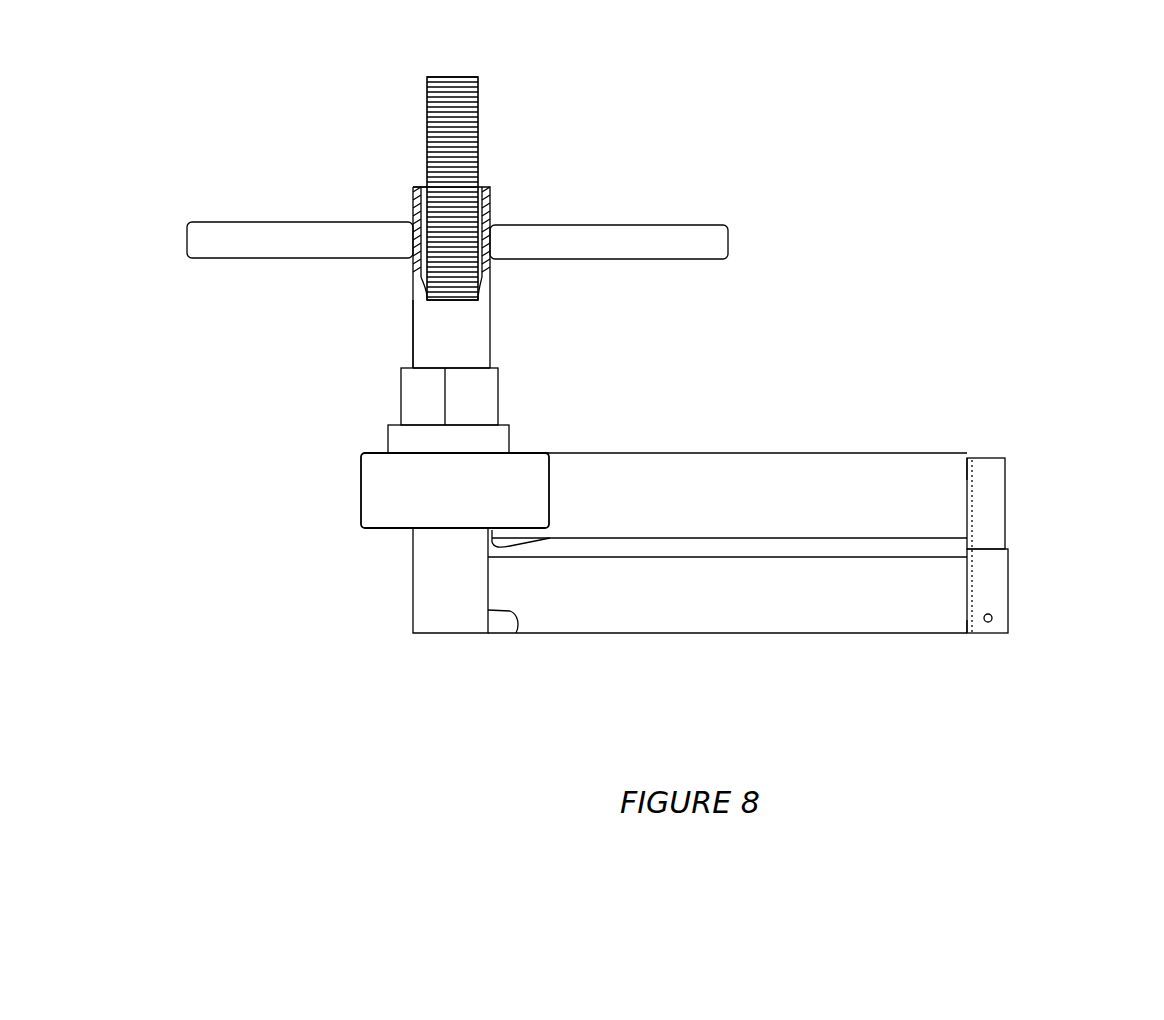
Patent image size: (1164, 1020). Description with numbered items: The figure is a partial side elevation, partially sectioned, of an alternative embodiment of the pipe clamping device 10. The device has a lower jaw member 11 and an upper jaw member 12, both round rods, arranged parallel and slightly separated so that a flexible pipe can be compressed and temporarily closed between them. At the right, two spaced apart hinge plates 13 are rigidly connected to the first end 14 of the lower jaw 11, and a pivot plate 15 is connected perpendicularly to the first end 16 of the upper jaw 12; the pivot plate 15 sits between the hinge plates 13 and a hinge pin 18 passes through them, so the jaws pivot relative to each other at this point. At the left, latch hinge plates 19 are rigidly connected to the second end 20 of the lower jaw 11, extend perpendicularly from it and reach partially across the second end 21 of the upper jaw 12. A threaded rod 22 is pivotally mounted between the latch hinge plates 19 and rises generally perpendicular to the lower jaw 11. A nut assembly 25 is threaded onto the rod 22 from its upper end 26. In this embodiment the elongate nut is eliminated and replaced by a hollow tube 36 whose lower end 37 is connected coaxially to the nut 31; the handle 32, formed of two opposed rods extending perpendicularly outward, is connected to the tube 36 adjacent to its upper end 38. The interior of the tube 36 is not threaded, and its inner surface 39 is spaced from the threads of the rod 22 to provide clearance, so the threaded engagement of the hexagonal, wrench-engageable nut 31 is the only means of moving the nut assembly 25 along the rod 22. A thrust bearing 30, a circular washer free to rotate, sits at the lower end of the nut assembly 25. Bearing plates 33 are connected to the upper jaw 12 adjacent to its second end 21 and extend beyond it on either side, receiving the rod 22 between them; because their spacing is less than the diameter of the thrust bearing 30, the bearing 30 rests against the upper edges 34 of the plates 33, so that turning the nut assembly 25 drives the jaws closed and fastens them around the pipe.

The clamping device 10 is at (852, 283).
The lower jaw member 11 is at (832, 610).
The upper jaw member 12 is at (745, 472).
The hinge plates 13 is at (995, 575).
The first end of lower jaw 14 is at (968, 608).
The pivot plate 15 is at (990, 495).
The first end of upper jaw 16 is at (967, 474).
The hinge pin 18 is at (994, 618).
The latch hinge plates 19 is at (437, 595).
The second end of lower jaw 20 is at (518, 633).
The second end of upper jaw 21 is at (550, 538).
The threaded rod 22 is at (478, 105).
The nut assembly 25 is at (392, 348).
The upper end of threaded rod 26 is at (445, 76).
The thrust bearing 30 is at (405, 438).
The second nut 31 is at (410, 392).
The handle 32 is at (246, 238).
The bearing plates 33 is at (385, 498).
The upper edges of bearing plates 34 is at (525, 452).
The hollow tube 36 is at (490, 328).
The lower end of tube 37 is at (473, 366).
The upper end of tube 38 is at (490, 185).
The inner surface of tube 39 is at (416, 186).